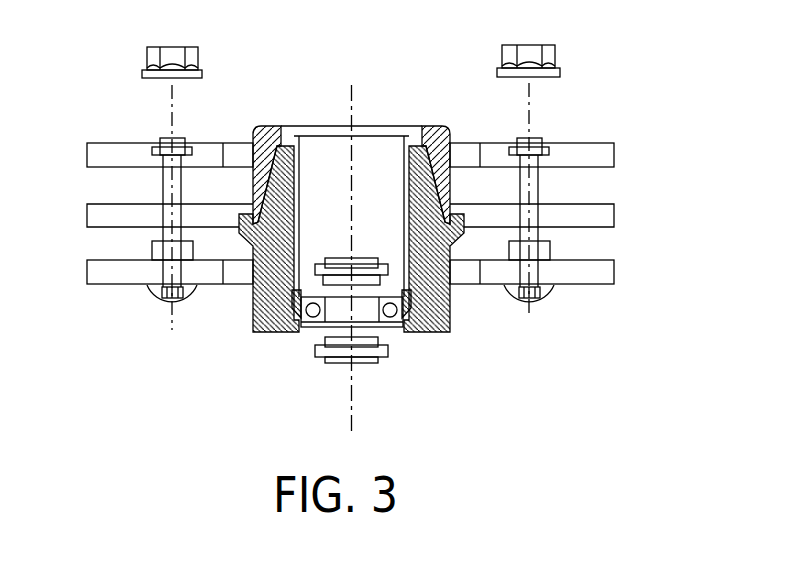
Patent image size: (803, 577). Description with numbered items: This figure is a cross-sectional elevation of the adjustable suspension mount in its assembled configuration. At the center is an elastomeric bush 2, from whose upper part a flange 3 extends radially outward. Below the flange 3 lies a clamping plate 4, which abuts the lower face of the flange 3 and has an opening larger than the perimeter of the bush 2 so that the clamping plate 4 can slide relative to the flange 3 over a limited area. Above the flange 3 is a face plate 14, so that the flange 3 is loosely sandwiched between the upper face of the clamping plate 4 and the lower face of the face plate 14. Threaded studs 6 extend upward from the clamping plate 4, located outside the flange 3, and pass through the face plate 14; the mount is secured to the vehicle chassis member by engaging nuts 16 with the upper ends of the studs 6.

The elastomeric bush 2 is at (252, 305).
The flange 3 is at (593, 213).
The clamping plate 4 is at (593, 270).
The threaded studs 6 is at (165, 303).
The face plate 14 is at (590, 155).
The nuts 16 is at (163, 78).